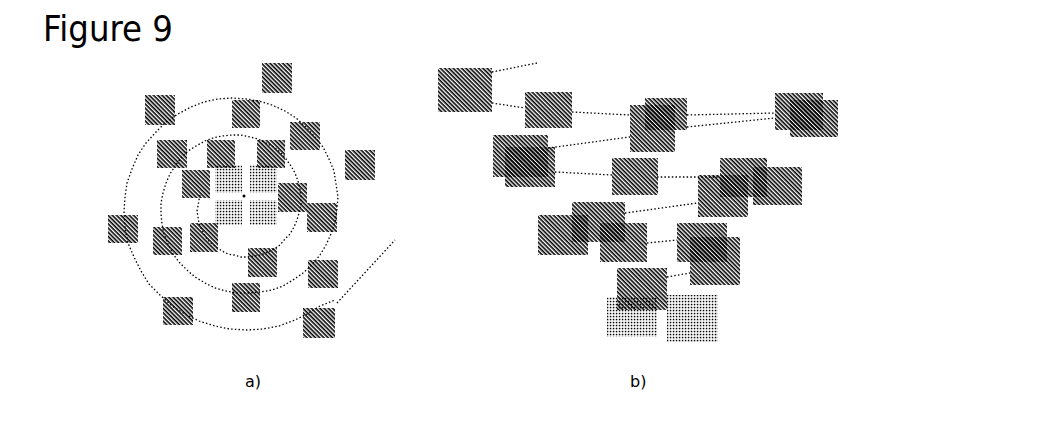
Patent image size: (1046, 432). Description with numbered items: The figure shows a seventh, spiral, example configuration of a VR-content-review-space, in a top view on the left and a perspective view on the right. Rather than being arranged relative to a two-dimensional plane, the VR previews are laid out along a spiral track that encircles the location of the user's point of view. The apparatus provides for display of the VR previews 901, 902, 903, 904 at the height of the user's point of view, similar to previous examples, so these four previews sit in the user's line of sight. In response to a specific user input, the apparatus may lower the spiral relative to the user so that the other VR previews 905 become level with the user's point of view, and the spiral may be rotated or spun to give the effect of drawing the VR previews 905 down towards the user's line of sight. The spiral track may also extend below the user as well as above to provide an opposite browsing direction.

The VR preview 901 is at (262, 215).
The VR preview 902 is at (230, 214).
The VR preview 903 is at (228, 178).
The VR preview 904 is at (263, 177).
The other VR previews 905 is at (838, 62).